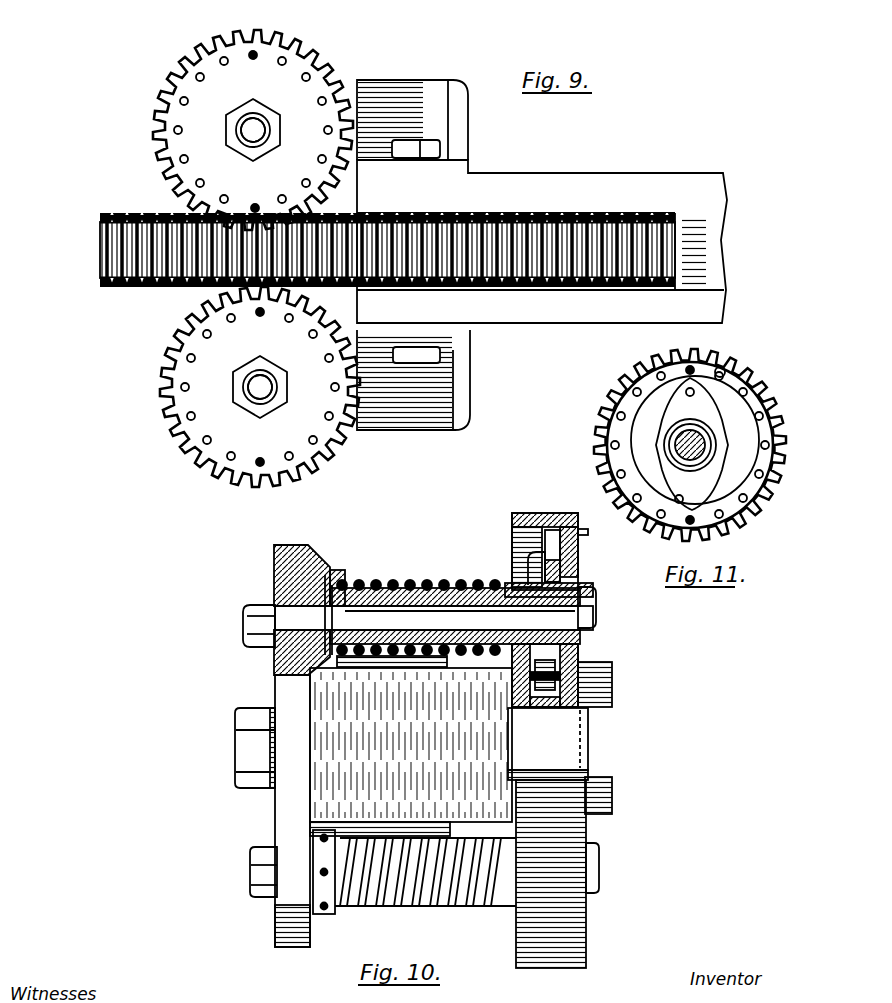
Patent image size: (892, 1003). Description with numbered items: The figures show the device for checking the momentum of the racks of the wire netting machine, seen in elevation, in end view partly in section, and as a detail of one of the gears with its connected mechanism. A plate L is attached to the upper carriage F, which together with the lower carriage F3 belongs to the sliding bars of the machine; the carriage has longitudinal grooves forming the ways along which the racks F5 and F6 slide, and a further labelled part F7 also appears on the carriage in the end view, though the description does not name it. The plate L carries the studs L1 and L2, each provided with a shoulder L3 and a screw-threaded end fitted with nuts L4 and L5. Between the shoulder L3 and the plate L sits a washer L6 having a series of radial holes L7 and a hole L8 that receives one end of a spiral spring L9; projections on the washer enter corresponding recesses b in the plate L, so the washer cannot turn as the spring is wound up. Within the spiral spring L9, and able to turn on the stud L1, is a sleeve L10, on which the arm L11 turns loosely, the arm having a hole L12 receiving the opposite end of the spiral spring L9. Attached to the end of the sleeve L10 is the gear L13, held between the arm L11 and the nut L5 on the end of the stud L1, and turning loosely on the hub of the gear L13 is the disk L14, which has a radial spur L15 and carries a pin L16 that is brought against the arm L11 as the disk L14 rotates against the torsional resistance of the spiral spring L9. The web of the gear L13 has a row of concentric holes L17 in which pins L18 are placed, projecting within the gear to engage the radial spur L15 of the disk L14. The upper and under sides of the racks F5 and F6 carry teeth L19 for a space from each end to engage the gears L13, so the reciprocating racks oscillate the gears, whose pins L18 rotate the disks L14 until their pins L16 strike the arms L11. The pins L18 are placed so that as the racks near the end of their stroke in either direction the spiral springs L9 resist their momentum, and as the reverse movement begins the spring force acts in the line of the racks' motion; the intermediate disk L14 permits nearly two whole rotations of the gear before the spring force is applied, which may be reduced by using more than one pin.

In FIG. 9, the plate L is at (425, 120).
In FIG. 10, the plate L is at (295, 798).
In FIG. 9, the stud L1 is at (258, 125).
In FIG. 11, the stud L1 is at (704, 452).
In FIG. 10, the stud L1 is at (410, 615).
In FIG. 9, the stud L2 is at (255, 380).
In FIG. 10, the stud L2 is at (250, 872).
In FIG. 10, the shoulder L3 is at (335, 585).
In FIG. 9, the nut L4 is at (243, 115).
In FIG. 10, the nut L4 is at (258, 606).
In FIG. 10, the nut L5 is at (597, 592).
In FIG. 10, the washer L6 is at (300, 650).
In FIG. 10, the radial holes L7 is at (328, 572).
In FIG. 10, the hole L8 is at (290, 670).
In FIG. 9, the spiral spring L9 is at (145, 292).
In FIG. 10, the spiral spring L9 is at (470, 652).
In FIG. 11, the sleeve L10 is at (711, 438).
In FIG. 10, the sleeve L10 is at (383, 585).
In FIG. 11, the arm L11 is at (664, 445).
In FIG. 10, the arm L11 is at (590, 532).
In FIG. 11, the hole L12 is at (686, 393).
In FIG. 10, the hole L12 is at (525, 562).
In FIG. 9, the gear L13 is at (322, 395).
In FIG. 11, the gear L13 is at (610, 430).
In FIG. 10, the gear L13 is at (545, 513).
In FIG. 11, the disk L14 is at (676, 498).
In FIG. 10, the disk L14 is at (575, 555).
In FIG. 11, the radial spur L15 is at (728, 365).
In FIG. 10, the radial spur L15 is at (578, 524).
In FIG. 10, the pin L16 is at (530, 678).
In FIG. 9, the concentric holes L17 is at (312, 82).
In FIG. 11, the concentric holes L17 is at (640, 375).
In FIG. 9, the pins L18 is at (256, 53).
In FIG. 11, the pins L18 is at (692, 368).
In FIG. 10, the pins L18 is at (612, 672).
In FIG. 9, the teeth L19 is at (110, 230).
In FIG. 10, the teeth L19 is at (345, 662).
In FIG. 9, the carriage F is at (600, 185).
In FIG. 10, the lower carriage F3 is at (560, 740).
In FIG. 9, the rack F5 is at (120, 258).
In FIG. 11, the rack F6 is at (676, 498).
In FIG. 10, the frame body F7 is at (412, 732).
In FIG. 10, the recesses b is at (300, 583).